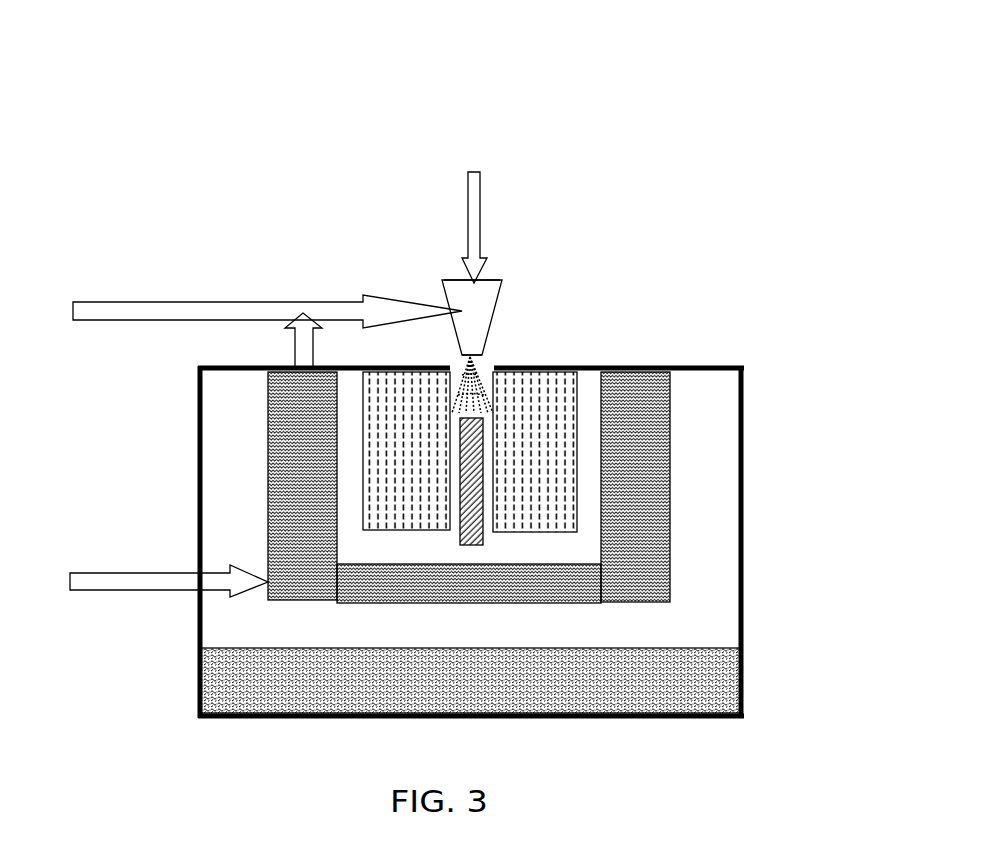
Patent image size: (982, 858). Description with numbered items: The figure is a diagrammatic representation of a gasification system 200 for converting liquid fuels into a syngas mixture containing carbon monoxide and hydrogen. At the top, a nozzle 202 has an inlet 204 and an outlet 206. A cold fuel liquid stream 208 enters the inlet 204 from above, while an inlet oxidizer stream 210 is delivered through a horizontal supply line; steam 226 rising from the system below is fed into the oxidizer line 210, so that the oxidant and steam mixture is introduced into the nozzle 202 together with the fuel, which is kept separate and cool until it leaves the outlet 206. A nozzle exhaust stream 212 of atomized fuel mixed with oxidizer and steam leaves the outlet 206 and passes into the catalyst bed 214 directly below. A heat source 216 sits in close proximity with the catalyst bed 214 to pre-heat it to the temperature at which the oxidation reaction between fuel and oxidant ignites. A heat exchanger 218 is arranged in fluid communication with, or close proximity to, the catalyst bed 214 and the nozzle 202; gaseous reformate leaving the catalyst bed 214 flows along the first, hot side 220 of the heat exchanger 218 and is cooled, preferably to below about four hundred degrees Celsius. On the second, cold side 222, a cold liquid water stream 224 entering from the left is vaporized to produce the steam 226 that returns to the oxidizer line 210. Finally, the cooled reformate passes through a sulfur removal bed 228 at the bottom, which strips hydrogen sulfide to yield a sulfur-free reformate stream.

The gasification system 200 is at (806, 33).
The nozzle 202 is at (478, 311).
The inlet 204 is at (488, 277).
The outlet 206 is at (478, 357).
The cold fuel liquid stream 208 is at (472, 226).
The inlet oxidizer stream 210 is at (108, 311).
The nozzle exhaust stream 212 is at (470, 383).
The catalyst bed 214 is at (527, 412).
The heat source 216 is at (469, 504).
The heat exchanger 218 is at (639, 504).
The first side 220 is at (338, 458).
The second side 222 is at (268, 492).
The cold liquid water stream 224 is at (105, 581).
The steam 226 is at (303, 358).
The sulfur removal bed 228 is at (653, 674).